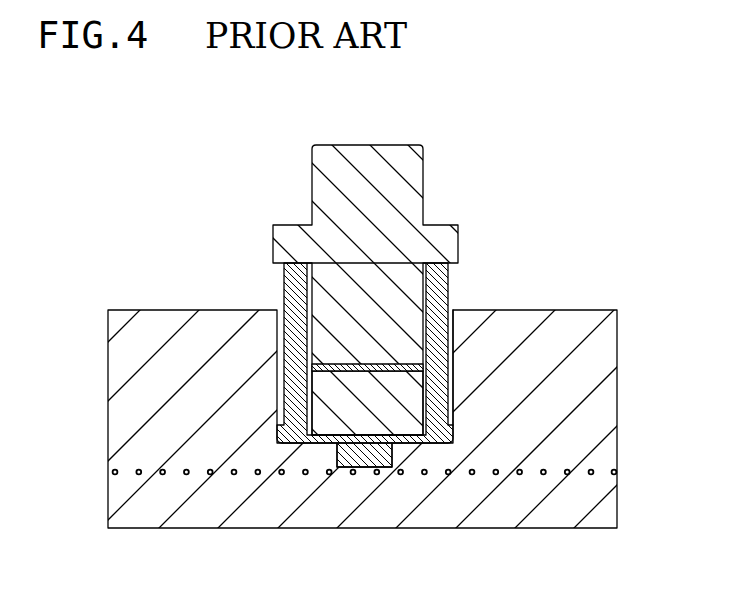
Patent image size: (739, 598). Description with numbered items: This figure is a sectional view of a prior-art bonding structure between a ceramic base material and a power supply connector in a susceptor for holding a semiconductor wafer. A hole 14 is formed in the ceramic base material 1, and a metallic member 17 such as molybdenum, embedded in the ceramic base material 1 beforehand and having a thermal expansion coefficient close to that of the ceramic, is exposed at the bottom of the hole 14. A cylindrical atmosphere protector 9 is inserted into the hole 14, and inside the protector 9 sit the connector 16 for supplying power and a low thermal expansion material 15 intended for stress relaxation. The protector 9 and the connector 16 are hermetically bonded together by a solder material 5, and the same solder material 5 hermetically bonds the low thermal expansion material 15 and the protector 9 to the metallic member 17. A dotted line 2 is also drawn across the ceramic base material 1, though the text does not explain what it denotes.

The ceramic base material 1 is at (568, 328).
The coolant passage boundary (dotted line) 2 is at (505, 475).
The solder material 5 is at (284, 265).
The cylindrical atmosphere protector 9 is at (448, 290).
The hole 14 is at (455, 375).
The low thermal expansion material 15 is at (328, 400).
The connector 16 is at (396, 184).
The metallic member 17 is at (373, 473).